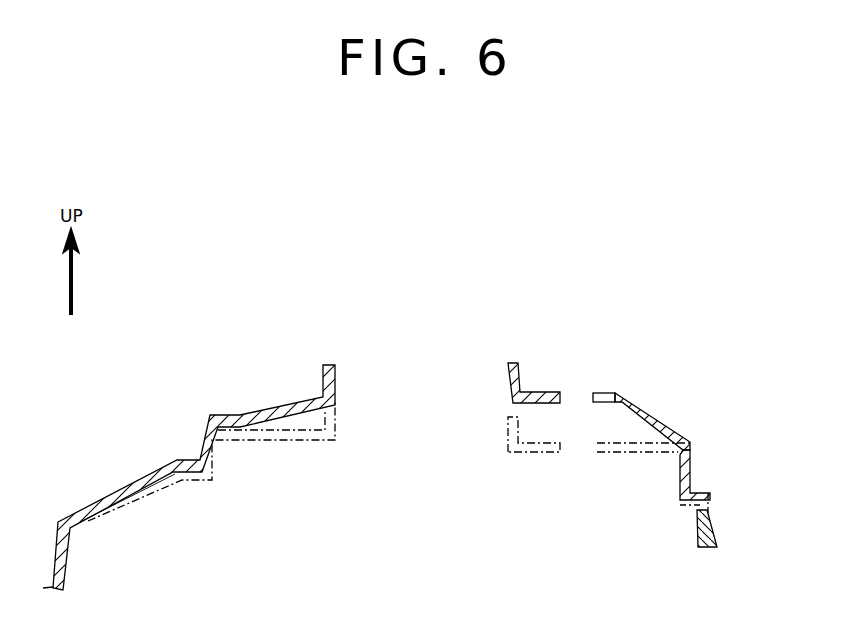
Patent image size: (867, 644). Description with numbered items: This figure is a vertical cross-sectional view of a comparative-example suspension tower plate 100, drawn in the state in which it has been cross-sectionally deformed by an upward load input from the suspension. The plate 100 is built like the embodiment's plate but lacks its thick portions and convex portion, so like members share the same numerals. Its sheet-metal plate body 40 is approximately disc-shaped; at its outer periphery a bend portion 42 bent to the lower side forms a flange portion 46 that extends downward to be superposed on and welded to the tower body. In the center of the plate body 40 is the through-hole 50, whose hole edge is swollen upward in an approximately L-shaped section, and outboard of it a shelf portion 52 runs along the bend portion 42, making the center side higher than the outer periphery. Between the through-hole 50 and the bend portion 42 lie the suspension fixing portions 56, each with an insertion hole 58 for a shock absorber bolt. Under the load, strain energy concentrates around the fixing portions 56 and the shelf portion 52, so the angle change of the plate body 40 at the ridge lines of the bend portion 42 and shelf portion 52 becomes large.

The suspension tower plate 100 is at (613, 282).
The plate body 40 is at (103, 498).
The bend portion 42 is at (690, 451).
The flange portion 46 is at (712, 507).
The through-hole 50 is at (337, 380).
The shelf portion 52 is at (197, 430).
The suspension fixing portion 56 is at (610, 393).
The insertion hole 58 is at (592, 398).